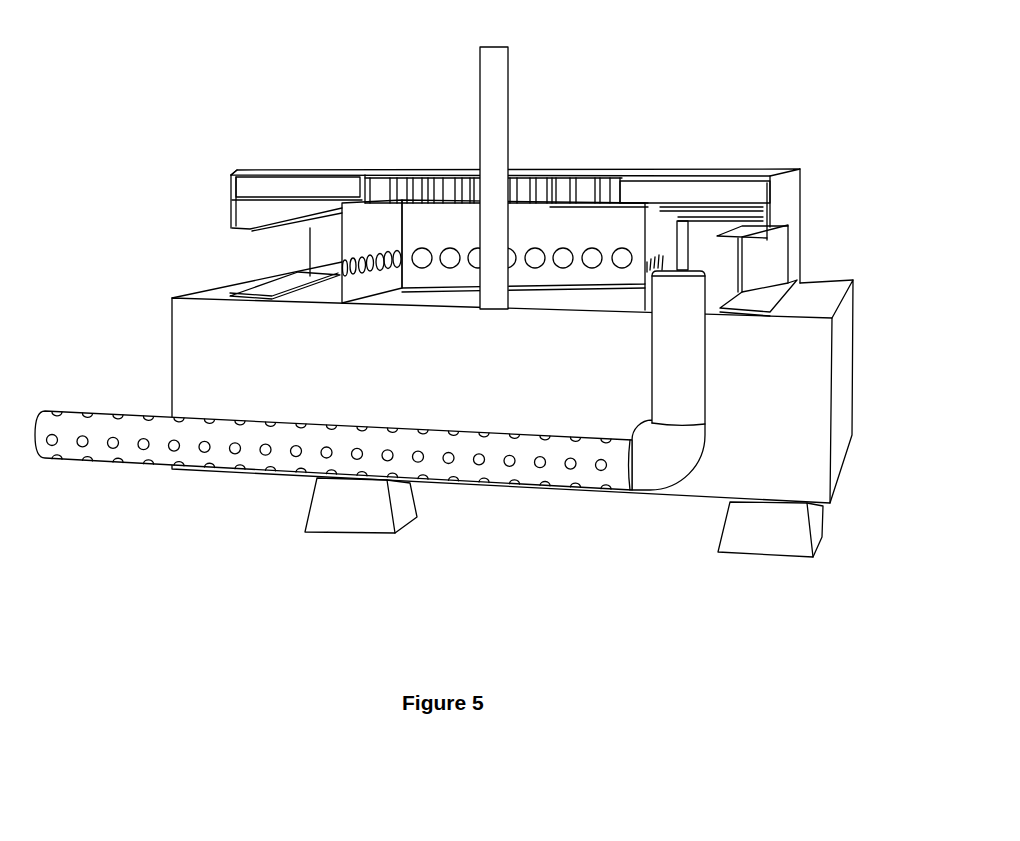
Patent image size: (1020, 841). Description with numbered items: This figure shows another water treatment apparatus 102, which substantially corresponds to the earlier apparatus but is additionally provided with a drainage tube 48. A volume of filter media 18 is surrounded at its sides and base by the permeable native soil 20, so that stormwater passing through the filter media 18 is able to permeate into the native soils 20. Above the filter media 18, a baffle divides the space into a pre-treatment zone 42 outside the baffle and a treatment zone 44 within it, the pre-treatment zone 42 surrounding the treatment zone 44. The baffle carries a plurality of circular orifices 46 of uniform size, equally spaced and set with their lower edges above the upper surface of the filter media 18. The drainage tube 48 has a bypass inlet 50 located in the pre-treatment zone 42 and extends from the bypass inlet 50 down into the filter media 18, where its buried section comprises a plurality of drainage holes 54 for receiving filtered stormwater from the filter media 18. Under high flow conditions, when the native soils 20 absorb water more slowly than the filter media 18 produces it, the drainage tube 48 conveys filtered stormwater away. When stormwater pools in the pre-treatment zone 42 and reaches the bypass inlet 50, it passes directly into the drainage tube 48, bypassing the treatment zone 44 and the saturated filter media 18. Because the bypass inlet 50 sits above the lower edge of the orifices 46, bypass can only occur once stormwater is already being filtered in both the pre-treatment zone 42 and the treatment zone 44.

The water treatment apparatus 102 is at (465, 288).
The pre-treatment zone 42 is at (297, 250).
The treatment zone 44 is at (493, 202).
The orifices 46 is at (421, 256).
The drainage tube 48 is at (697, 368).
The bypass inlet 50 is at (693, 270).
The filter media 18 is at (603, 370).
The native soil 20 is at (895, 390).
The drainage holes 54 is at (475, 460).